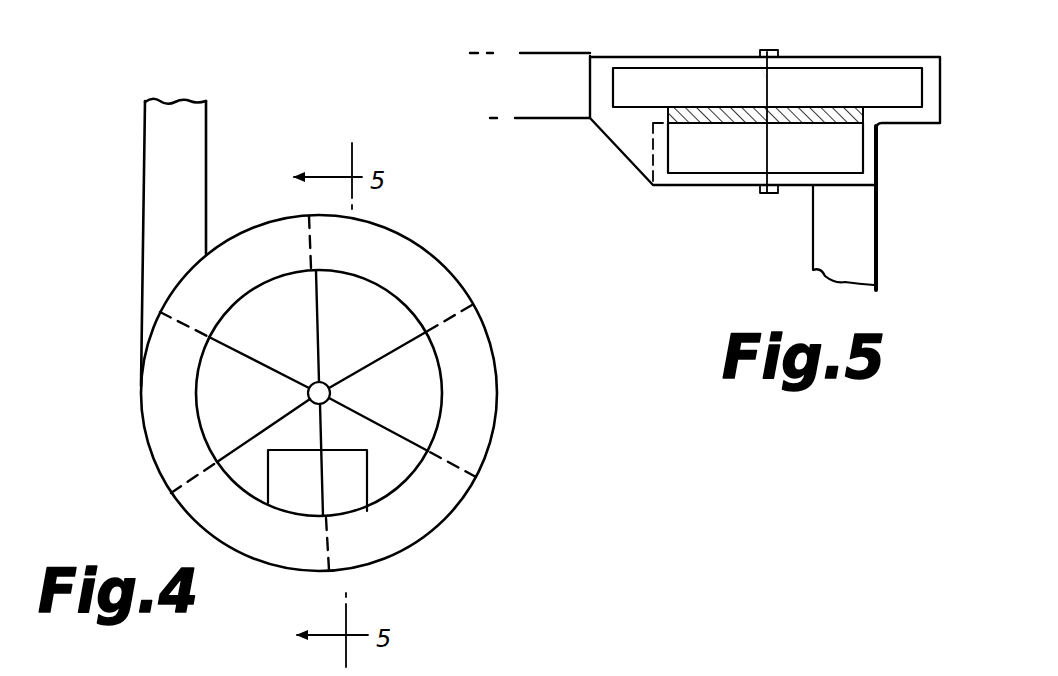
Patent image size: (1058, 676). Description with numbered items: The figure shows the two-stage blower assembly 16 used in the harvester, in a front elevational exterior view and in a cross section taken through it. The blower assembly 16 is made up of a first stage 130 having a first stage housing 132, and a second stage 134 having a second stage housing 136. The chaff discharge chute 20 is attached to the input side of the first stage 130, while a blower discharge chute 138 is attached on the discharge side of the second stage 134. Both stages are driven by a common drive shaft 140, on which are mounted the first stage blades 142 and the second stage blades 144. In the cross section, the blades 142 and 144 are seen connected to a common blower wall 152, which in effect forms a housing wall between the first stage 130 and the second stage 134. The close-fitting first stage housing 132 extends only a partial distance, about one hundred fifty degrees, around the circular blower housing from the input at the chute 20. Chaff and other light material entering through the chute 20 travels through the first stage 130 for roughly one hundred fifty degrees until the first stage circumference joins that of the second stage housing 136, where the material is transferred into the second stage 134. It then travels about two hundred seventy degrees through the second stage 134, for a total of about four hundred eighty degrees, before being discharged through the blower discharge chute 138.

In FIG. 4, the two-stage blower assembly 16 is at (498, 331).
In FIG. 5, the two-stage blower assembly 16 is at (780, 257).
In FIG. 4, the chaff discharge chute 20 is at (313, 490).
In FIG. 5, the chaff discharge chute 20 is at (878, 272).
In FIG. 4, the first stage 130 is at (195, 408).
In FIG. 5, the first stage 130 is at (882, 186).
In FIG. 4, the first stage housing 132 is at (243, 493).
In FIG. 5, the first stage housing 132 is at (687, 188).
In FIG. 4, the second stage 134 is at (430, 538).
In FIG. 5, the second stage 134 is at (947, 67).
In FIG. 4, the second stage housing 136 is at (463, 497).
In FIG. 5, the second stage housing 136 is at (793, 55).
In FIG. 4, the blower discharge chute 138 is at (190, 178).
In FIG. 5, the blower discharge chute 138 is at (548, 52).
In FIG. 5, the drive shaft 140 is at (765, 80).
In FIG. 5, the first stage blades 142 is at (826, 166).
In FIG. 5, the second stage blades 144 is at (836, 101).
In FIG. 5, the common blower wall 152 is at (724, 108).